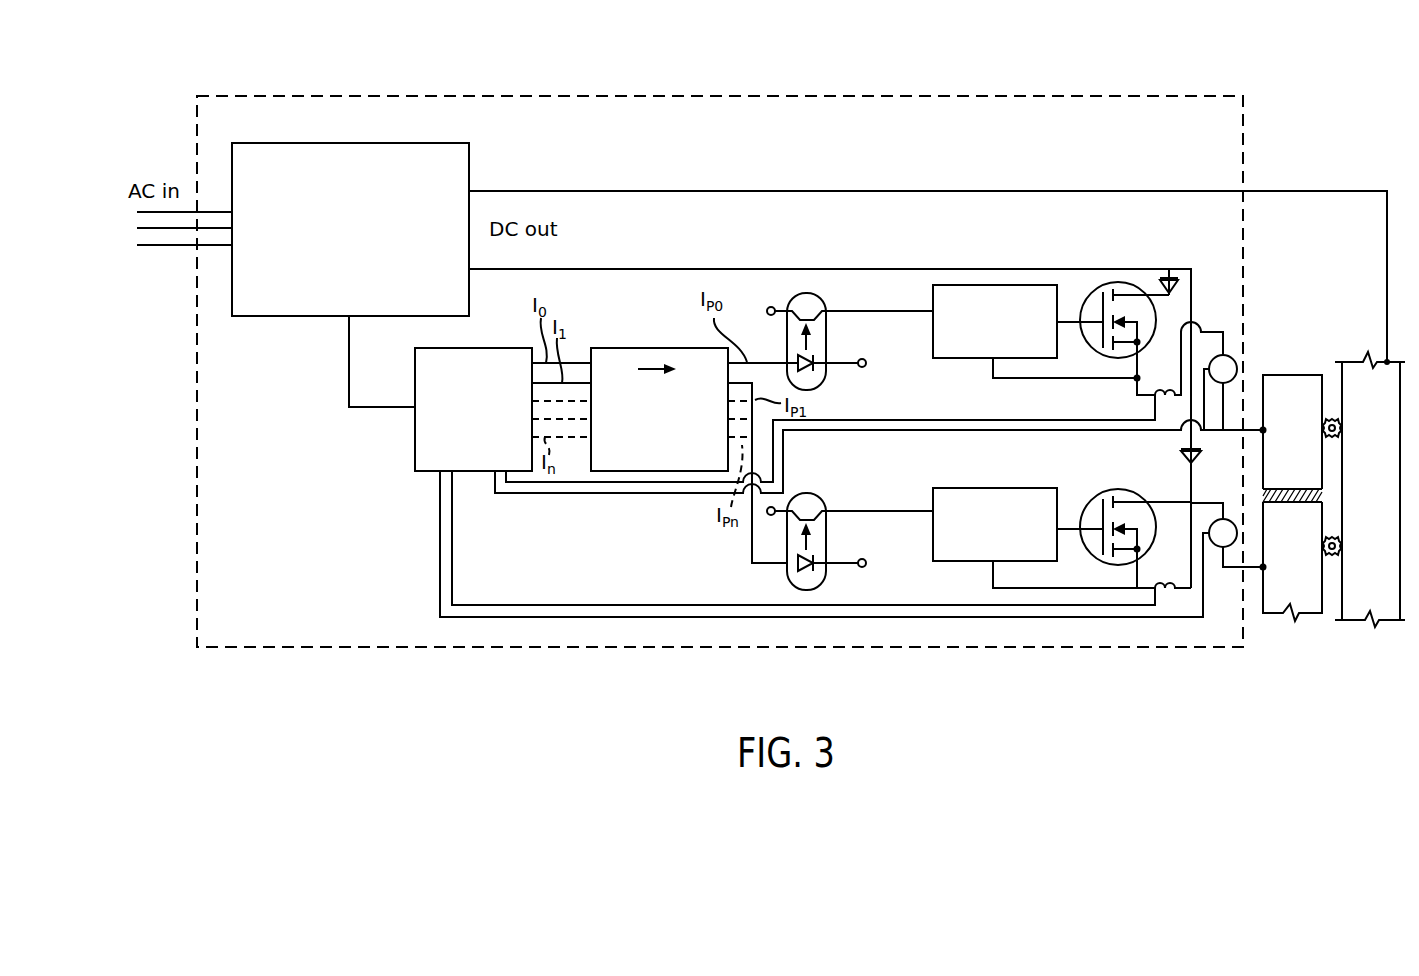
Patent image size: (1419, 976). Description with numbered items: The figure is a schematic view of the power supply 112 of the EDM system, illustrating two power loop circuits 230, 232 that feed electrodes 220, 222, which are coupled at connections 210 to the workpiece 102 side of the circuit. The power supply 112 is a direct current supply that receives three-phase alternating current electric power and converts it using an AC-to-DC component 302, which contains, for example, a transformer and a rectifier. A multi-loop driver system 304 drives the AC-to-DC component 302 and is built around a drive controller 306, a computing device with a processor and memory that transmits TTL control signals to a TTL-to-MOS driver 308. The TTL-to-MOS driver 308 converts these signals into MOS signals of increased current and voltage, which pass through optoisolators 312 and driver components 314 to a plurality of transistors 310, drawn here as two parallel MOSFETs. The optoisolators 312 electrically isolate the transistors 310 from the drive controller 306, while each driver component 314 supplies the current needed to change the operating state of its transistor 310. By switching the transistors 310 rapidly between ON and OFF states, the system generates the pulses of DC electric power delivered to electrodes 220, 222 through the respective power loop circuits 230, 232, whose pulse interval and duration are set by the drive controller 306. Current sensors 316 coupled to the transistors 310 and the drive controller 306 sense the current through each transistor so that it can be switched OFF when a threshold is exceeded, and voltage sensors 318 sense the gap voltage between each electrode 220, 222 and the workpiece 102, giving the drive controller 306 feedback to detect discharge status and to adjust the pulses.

The workpiece 102 is at (1353, 502).
The power supply 112 is at (762, 96).
The connector 210 is at (1332, 419).
The electrode 220 is at (1273, 442).
The electrode 222 is at (1273, 569).
The power loop circuit 230 is at (1225, 333).
The power loop circuit 232 is at (1191, 464).
The AC-to-DC component 302 is at (333, 270).
The multi-loop driver system 304 is at (410, 612).
The drive controller 306 is at (455, 448).
The TTL-to-MOS driver 308 is at (641, 420).
The transistor 310 is at (1124, 283).
The optoisolator 312 is at (806, 293).
The driver component 314 is at (996, 284).
The current sensor 316 is at (1155, 410).
The voltage sensor 318 is at (1233, 359).